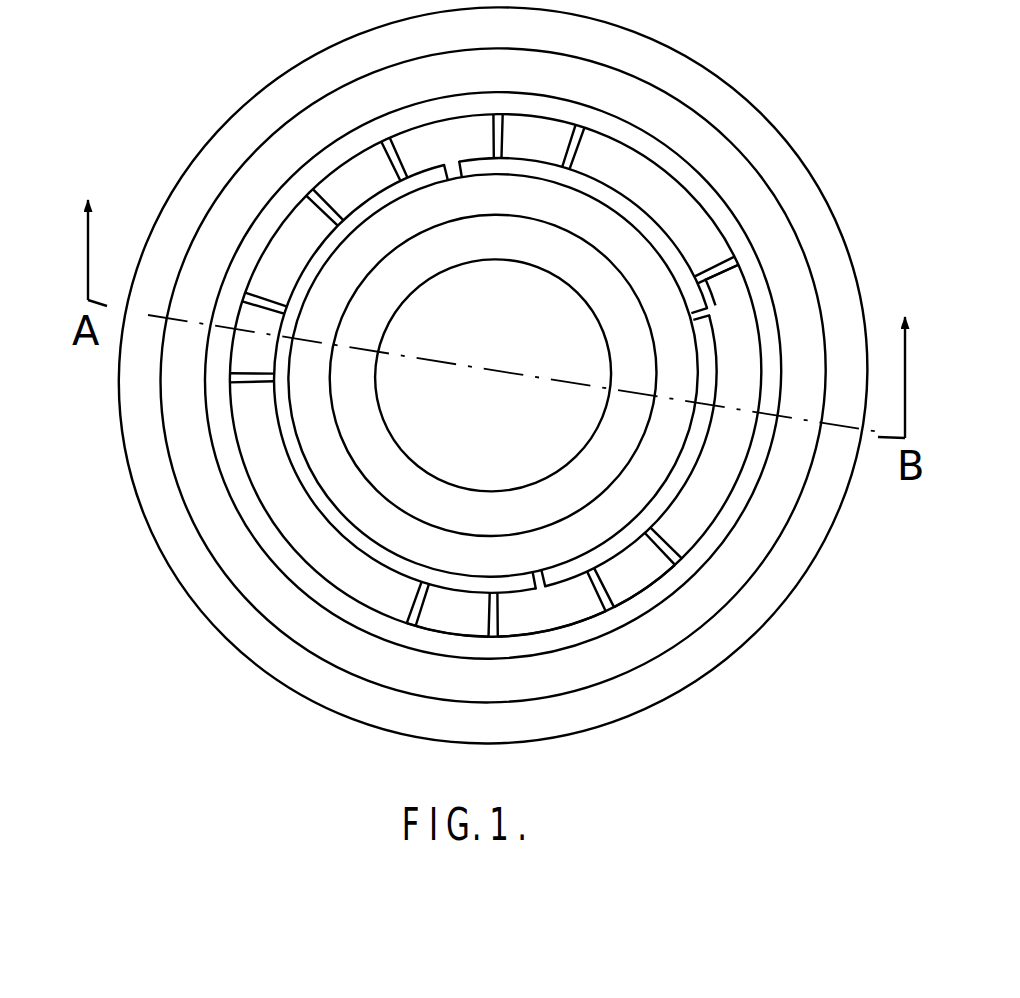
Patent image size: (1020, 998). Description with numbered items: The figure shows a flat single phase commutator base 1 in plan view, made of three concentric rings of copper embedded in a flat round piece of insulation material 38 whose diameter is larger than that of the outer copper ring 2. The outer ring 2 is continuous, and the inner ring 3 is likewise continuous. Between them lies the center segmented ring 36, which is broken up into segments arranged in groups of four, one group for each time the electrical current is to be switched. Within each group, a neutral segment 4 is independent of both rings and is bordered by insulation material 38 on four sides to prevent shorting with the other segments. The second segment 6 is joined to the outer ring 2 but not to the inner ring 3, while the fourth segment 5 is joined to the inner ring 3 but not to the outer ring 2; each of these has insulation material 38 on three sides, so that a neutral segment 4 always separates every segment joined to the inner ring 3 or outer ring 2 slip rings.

The outer housing 1 is at (581, 738).
The outer ring 2 is at (297, 147).
The inner ring 3 is at (345, 270).
The neutral segment 4 is at (461, 612).
The fourth segment 5 is at (556, 607).
The second segment 6 is at (690, 520).
The center segmented ring 36 is at (253, 431).
The insulation material 38 is at (360, 407).